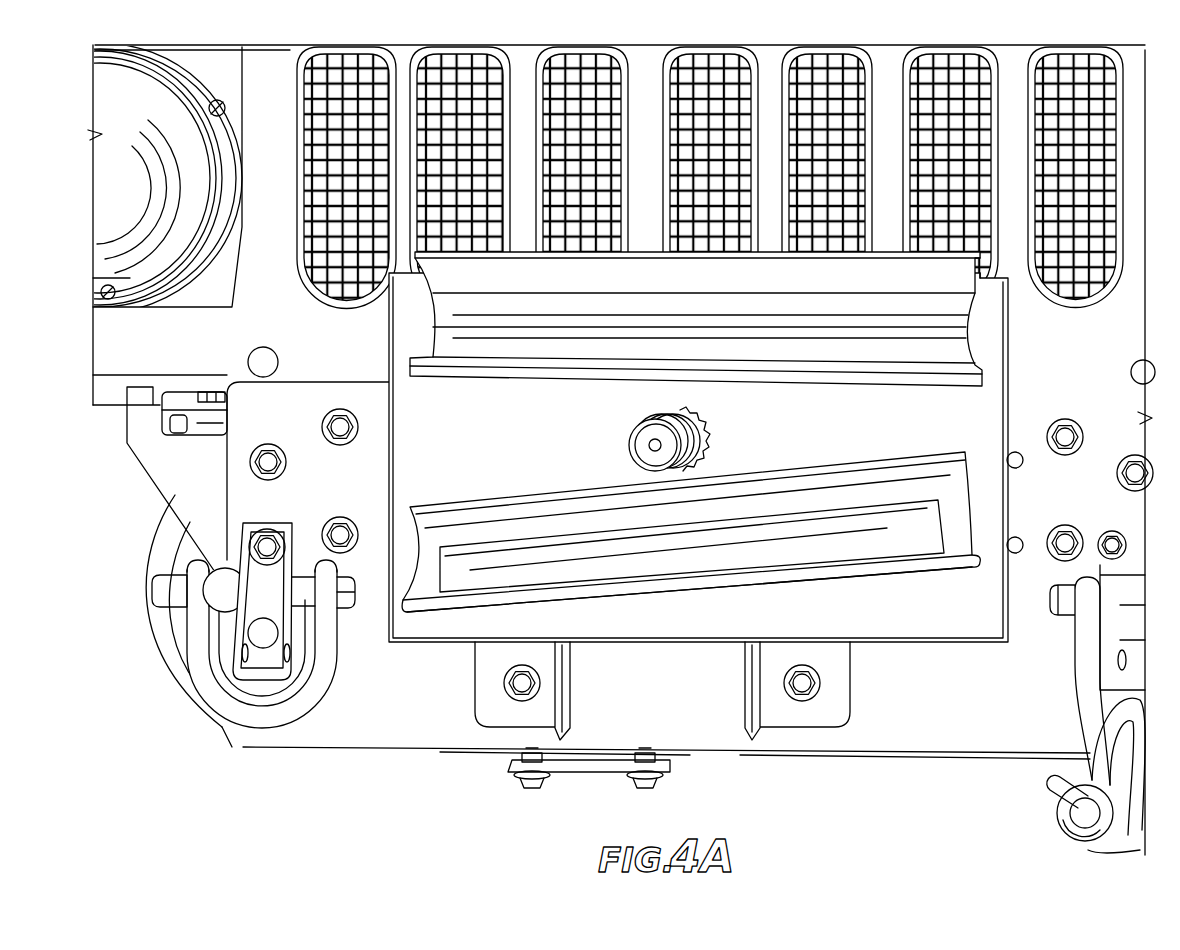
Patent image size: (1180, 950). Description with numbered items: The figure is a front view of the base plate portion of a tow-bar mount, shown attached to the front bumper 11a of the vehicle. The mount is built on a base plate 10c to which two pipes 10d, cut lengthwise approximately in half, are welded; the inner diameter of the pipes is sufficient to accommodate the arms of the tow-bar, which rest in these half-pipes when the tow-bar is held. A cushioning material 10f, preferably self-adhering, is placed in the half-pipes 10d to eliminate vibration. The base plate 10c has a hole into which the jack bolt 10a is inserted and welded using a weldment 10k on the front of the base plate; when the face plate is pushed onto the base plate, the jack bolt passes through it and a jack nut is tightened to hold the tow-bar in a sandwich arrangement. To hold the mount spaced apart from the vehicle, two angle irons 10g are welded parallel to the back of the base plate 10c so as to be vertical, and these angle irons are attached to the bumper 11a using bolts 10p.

The jack bolt 10a is at (640, 445).
The base plate 10c is at (437, 455).
The pipes 10d is at (420, 358).
The cushioning material 10f is at (433, 322).
The angle irons 10g is at (555, 715).
The weldment 10k is at (706, 426).
The bolts 10p is at (808, 683).
The front bumper 11a is at (685, 731).